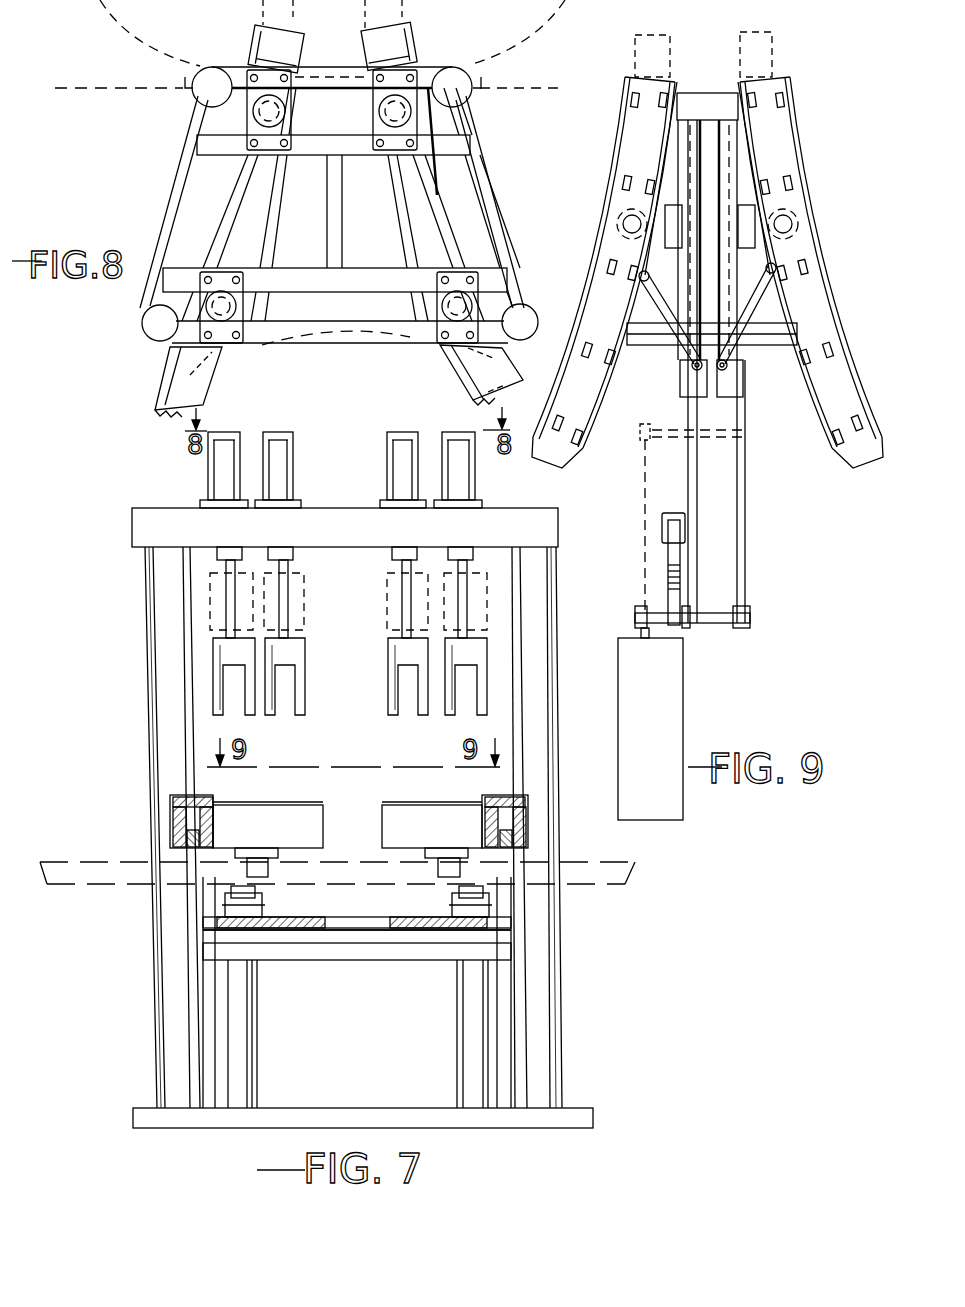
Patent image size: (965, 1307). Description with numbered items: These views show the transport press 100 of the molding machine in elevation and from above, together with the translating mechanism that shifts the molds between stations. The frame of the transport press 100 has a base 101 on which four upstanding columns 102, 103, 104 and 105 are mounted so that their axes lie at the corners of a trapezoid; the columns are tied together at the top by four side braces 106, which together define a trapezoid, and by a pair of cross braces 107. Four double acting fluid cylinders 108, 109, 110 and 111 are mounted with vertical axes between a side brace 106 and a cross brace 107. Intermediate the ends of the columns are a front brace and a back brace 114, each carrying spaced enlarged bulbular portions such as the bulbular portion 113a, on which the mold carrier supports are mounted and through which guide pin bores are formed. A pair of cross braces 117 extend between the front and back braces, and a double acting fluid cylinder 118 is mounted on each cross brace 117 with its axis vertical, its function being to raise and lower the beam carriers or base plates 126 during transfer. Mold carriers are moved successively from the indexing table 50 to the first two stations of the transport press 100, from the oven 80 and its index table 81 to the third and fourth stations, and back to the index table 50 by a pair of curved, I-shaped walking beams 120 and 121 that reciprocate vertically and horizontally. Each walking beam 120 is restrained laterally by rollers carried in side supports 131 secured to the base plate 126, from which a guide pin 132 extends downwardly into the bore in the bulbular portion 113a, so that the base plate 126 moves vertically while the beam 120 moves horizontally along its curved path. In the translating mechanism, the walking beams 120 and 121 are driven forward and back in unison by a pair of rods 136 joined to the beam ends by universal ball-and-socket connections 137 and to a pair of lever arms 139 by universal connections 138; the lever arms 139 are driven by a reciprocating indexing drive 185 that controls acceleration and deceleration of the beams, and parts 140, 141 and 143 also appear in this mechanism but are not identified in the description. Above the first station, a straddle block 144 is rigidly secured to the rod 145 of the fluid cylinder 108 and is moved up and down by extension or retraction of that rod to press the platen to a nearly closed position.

In FIG. 8, the indexing table 50 is at (403, 347).
In FIG. 7, the indexing table 50 is at (88, 857).
In FIG. 8, the oven 80 is at (95, 95).
In FIG. 8, the index table of the oven 81 is at (140, 30).
In FIG. 8, the transport press 100 is at (508, 182).
In FIG. 7, the transport press 100 is at (138, 818).
In FIG. 7, the base 101 is at (136, 1108).
In FIG. 8, the upstanding column 102 is at (513, 304).
In FIG. 7, the upstanding column 102 is at (555, 1052).
In FIG. 8, the upstanding column 103 is at (460, 88).
In FIG. 7, the upstanding column 103 is at (467, 1077).
In FIG. 8, the upstanding column 104 is at (210, 74).
In FIG. 7, the upstanding column 104 is at (250, 1087).
In FIG. 8, the upstanding column 105 is at (142, 330).
In FIG. 7, the upstanding column 105 is at (152, 1036).
In FIG. 8, the side brace 106 is at (430, 67).
In FIG. 7, the side brace 106 is at (363, 538).
In FIG. 8, the cross brace 107 is at (345, 160).
In FIG. 8, the double acting fluid cylinder 108 is at (442, 303).
In FIG. 7, the double acting fluid cylinder 108 is at (453, 473).
In FIG. 8, the double acting fluid cylinder 109 is at (398, 108).
In FIG. 7, the double acting fluid cylinder 109 is at (400, 462).
In FIG. 8, the double acting fluid cylinder 110 is at (293, 107).
In FIG. 7, the double acting fluid cylinder 110 is at (280, 467).
In FIG. 8, the double acting fluid cylinder 111 is at (250, 305).
In FIG. 7, the double acting fluid cylinder 111 is at (220, 478).
In FIG. 7, the bulbular portion 113a is at (388, 957).
In FIG. 7, the back brace 114 is at (360, 928).
In FIG. 7, the cross brace 117 is at (353, 896).
In FIG. 7, the double acting fluid cylinder 118 is at (263, 903).
In FIG. 8, the walking beam 120 is at (423, 222).
In FIG. 9, the walking beam 120 is at (780, 44).
In FIG. 7, the walking beam 120 is at (227, 803).
In FIG. 8, the walking beam 121 is at (240, 233).
In FIG. 9, the walking beam 121 is at (630, 55).
In FIG. 9, the base plate 126 is at (643, 128).
In FIG. 7, the base plate 126 is at (528, 847).
In FIG. 8, the side support 131 is at (237, 183).
In FIG. 9, the side support 131 is at (625, 143).
In FIG. 7, the side support 131 is at (291, 838).
In FIG. 9, the guide pin 132 is at (625, 207).
In FIG. 7, the guide pin 132 is at (268, 869).
In FIG. 9, the rod 136 is at (678, 332).
In FIG. 9, the universal connection 137 is at (640, 280).
In FIG. 9, the universal connection 138 is at (694, 368).
In FIG. 9, the lever arm 139 is at (690, 468).
In FIG. 9, the bracket 140 is at (718, 624).
In FIG. 9, the threaded rod 141 is at (668, 563).
In FIG. 9, the coupling 143 is at (640, 632).
In FIG. 7, the straddle block 144 is at (487, 670).
In FIG. 9, the cylinder rod 145 is at (673, 528).
In FIG. 7, the cylinder rod 145 is at (480, 582).
In FIG. 9, the reciprocating indexing drive 185 is at (683, 688).